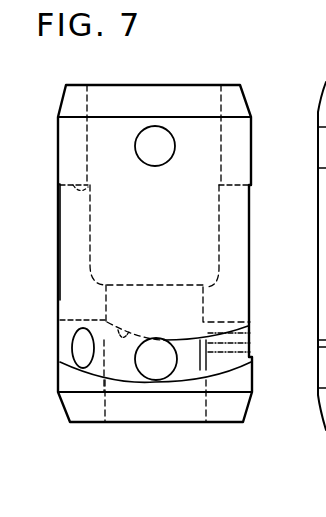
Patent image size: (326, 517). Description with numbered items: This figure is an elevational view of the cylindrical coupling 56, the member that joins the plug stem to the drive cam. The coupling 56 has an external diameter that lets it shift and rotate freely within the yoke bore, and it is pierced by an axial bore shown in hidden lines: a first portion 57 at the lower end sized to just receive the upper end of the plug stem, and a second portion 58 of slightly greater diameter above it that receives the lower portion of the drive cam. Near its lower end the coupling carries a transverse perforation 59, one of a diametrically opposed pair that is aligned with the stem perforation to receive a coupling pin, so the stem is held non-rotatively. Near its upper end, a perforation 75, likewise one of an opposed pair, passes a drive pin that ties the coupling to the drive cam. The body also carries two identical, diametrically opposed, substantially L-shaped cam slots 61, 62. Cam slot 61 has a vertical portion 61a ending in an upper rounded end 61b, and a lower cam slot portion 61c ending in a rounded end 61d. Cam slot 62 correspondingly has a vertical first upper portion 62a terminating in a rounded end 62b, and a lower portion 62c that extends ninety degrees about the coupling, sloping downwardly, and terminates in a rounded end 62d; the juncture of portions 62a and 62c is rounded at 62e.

The coupling 56 is at (87, 85).
The perforation 75 is at (157, 126).
The cam slot 61 is at (73, 220).
The vertical portion 61a is at (81, 248).
The upper rounded end 61b is at (88, 188).
The lower cam slot portion 61c is at (126, 331).
The rounded end 61d is at (166, 352).
The second portion of axial bore 58 is at (92, 218).
The transverse perforation 59 is at (77, 350).
The first portion of axial bore 57 is at (105, 405).
The cam slot 62 is at (248, 362).
The first upper portion 62a is at (239, 248).
The rounded end 62b is at (235, 188).
The lower portion 62c is at (248, 332).
The rounded end 62d is at (323, 368).
The rounded juncture 62e is at (250, 343).